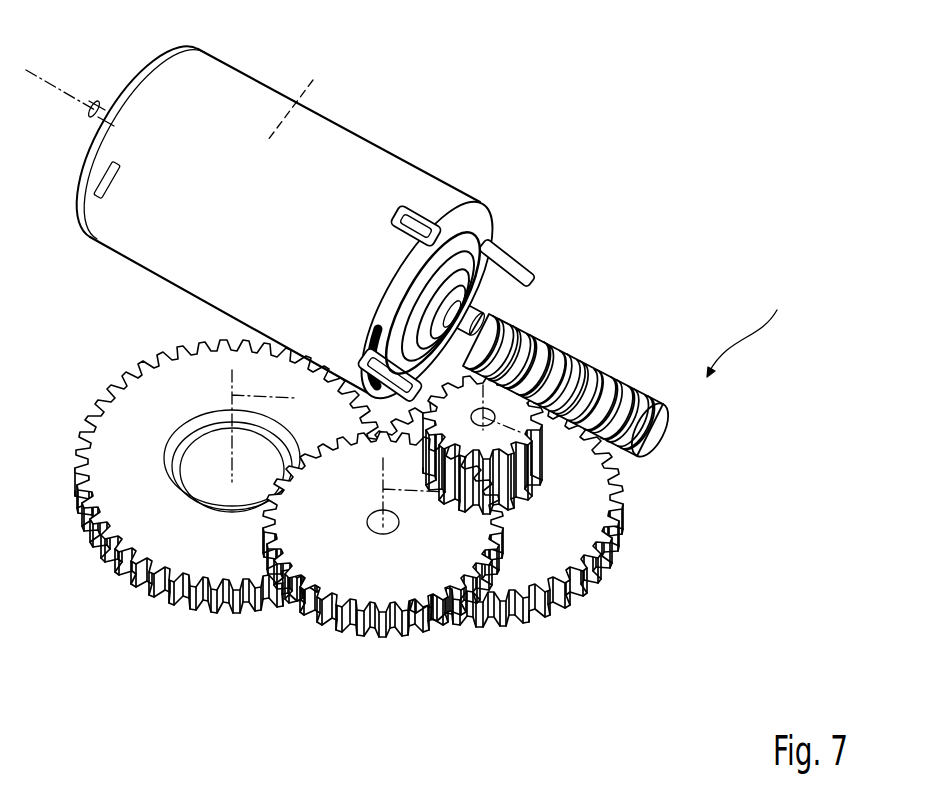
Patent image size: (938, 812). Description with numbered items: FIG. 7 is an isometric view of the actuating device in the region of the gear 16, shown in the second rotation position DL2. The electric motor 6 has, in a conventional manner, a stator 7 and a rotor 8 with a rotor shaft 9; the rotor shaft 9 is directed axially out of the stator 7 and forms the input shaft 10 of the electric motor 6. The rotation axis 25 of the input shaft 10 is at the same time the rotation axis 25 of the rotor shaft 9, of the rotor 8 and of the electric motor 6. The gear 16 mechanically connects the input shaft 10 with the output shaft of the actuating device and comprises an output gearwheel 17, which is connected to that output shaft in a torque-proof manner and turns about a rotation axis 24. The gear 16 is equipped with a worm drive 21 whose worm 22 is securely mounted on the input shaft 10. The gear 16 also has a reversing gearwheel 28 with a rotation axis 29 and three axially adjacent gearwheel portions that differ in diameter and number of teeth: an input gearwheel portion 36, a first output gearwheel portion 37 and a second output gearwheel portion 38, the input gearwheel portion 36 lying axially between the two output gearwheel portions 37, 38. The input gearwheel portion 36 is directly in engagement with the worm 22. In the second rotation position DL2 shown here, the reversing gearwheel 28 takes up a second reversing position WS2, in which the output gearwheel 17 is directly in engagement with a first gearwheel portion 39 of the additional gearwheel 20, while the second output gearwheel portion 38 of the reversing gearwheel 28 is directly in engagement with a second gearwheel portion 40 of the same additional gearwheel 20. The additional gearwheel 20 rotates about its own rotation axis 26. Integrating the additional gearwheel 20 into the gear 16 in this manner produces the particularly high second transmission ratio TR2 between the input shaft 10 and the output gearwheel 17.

The electric motor 6 is at (314, 208).
The stator 7 is at (333, 137).
The rotor 8 is at (295, 94).
The rotor shaft 9 is at (523, 290).
The input shaft 10 is at (477, 316).
The gear 16 is at (554, 550).
The output gearwheel 17 is at (230, 459).
The additional gearwheel 20 is at (383, 589).
The worm drive 21 is at (542, 550).
The worm 22 is at (620, 382).
The rotation axis 24 is at (243, 441).
The rotation axis 25 is at (68, 92).
The rotation axis 26 is at (419, 496).
The reversing gearwheel 28 is at (530, 603).
The rotation axis 29 is at (552, 471).
The input gearwheel portion 36 is at (537, 487).
The first output gearwheel portion 37 is at (580, 593).
The second output gearwheel portion 38 is at (597, 567).
The first gearwheel portion 39 is at (374, 645).
The second gearwheel portion 40 is at (322, 617).
The second rotation position DL2 is at (785, 327).
The second transmission ratio TR2 is at (785, 327).
The second reversing position WS2 is at (530, 603).